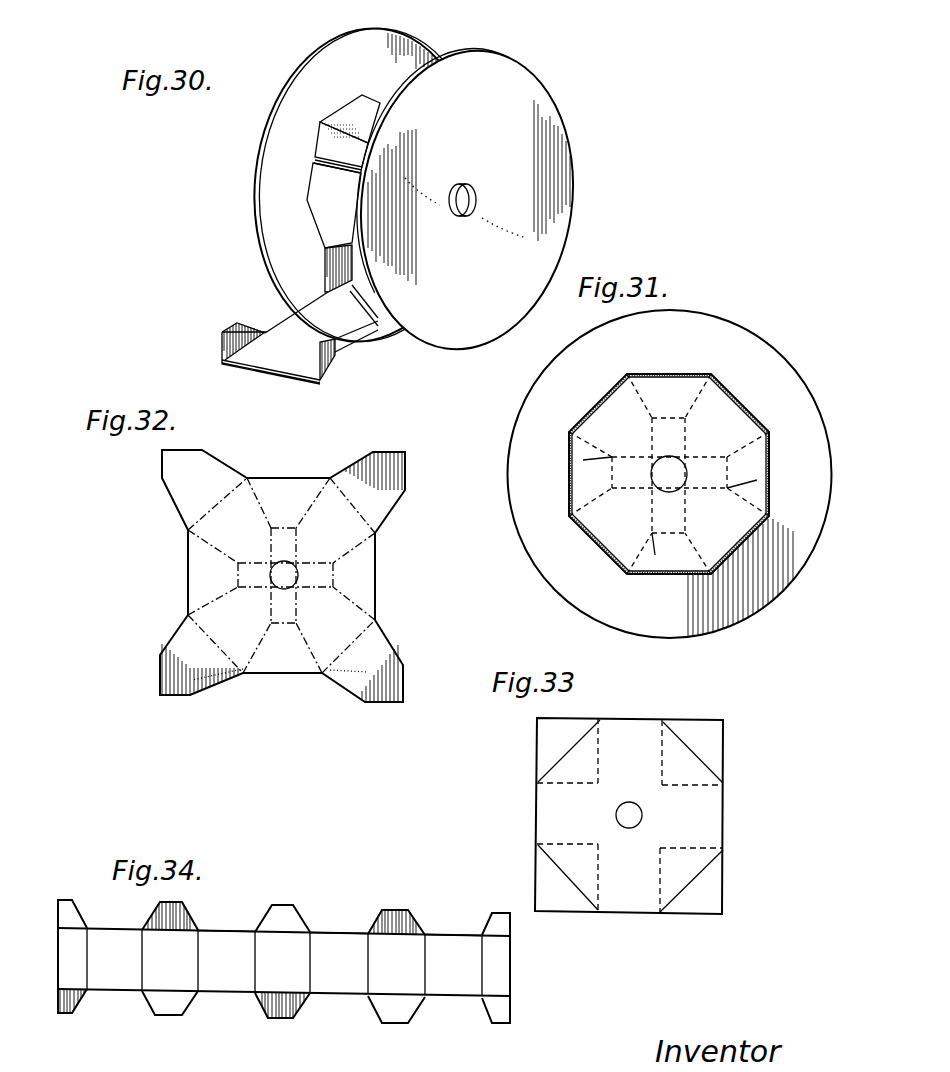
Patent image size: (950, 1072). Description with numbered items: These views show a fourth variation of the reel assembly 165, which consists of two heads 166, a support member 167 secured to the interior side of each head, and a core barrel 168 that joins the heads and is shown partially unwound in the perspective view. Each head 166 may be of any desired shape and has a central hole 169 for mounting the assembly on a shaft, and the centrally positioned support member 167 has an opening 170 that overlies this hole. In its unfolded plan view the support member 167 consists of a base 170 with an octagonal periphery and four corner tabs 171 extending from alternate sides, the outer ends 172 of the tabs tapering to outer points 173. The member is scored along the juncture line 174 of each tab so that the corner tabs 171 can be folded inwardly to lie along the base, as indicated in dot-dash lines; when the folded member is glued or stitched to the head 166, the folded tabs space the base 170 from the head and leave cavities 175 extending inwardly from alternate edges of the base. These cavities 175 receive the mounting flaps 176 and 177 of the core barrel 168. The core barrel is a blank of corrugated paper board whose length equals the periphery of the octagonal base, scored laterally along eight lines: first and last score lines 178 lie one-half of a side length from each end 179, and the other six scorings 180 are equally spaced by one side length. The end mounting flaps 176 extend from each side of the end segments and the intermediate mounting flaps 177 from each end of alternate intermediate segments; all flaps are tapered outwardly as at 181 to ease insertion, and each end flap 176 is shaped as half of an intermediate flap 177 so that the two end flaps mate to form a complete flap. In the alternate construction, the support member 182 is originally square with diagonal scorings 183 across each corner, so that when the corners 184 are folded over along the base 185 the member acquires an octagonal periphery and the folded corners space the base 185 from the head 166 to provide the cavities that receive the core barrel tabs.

In FIG. 30, the reel assembly 165 is at (577, 111).
In FIG. 31, the reel assembly 165 is at (753, 326).
In FIG. 30, the head 166 is at (410, 55).
In FIG. 31, the head 166 is at (767, 370).
In FIG. 30, the support member 167 is at (312, 212).
In FIG. 32, the support member 167 is at (373, 568).
In FIG. 30, the core barrel 168 is at (373, 336).
In FIG. 31, the core barrel 168 is at (746, 418).
In FIG. 34, the core barrel 168 is at (240, 930).
In FIG. 30, the central hole 169 is at (478, 200).
In FIG. 30, the base 170 is at (474, 195).
In FIG. 31, the base 170 is at (669, 474).
In FIG. 32, the base 170 is at (347, 582).
In FIG. 31, the corner tab 171 is at (598, 417).
In FIG. 32, the corner tab 171 is at (213, 475).
In FIG. 31, the outer end 172 is at (657, 417).
In FIG. 32, the outer end 172 is at (180, 700).
In FIG. 32, the outer point 173 is at (408, 452).
In FIG. 32, the juncture line 174 is at (356, 507).
In FIG. 30, the cavity 175 is at (326, 247).
In FIG. 30, the end mounting flap 176 is at (340, 366).
In FIG. 31, the end mounting flap 176 is at (681, 393).
In FIG. 34, the end mounting flap 176 is at (83, 923).
In FIG. 30, the intermediate mounting flap 177 is at (332, 264).
In FIG. 31, the intermediate mounting flap 177 is at (583, 460).
In FIG. 34, the intermediate mounting flap 177 is at (183, 913).
In FIG. 30, the end score line 178 is at (297, 353).
In FIG. 32, the end score line 178 is at (400, 445).
In FIG. 34, the end score line 178 is at (95, 958).
In FIG. 30, the end 179 is at (260, 370).
In FIG. 34, the end 179 is at (57, 945).
In FIG. 30, the intermediate scoring 180 is at (349, 292).
In FIG. 34, the intermediate scoring 180 is at (200, 970).
In FIG. 30, the tapered portion 181 is at (252, 323).
In FIG. 34, the tapered portion 181 is at (157, 910).
In FIG. 33, the alternate support member 182 is at (725, 803).
In FIG. 33, the diagonal scoring 183 is at (727, 750).
In FIG. 33, the corner 184 is at (550, 728).
In FIG. 33, the base 185 is at (552, 797).